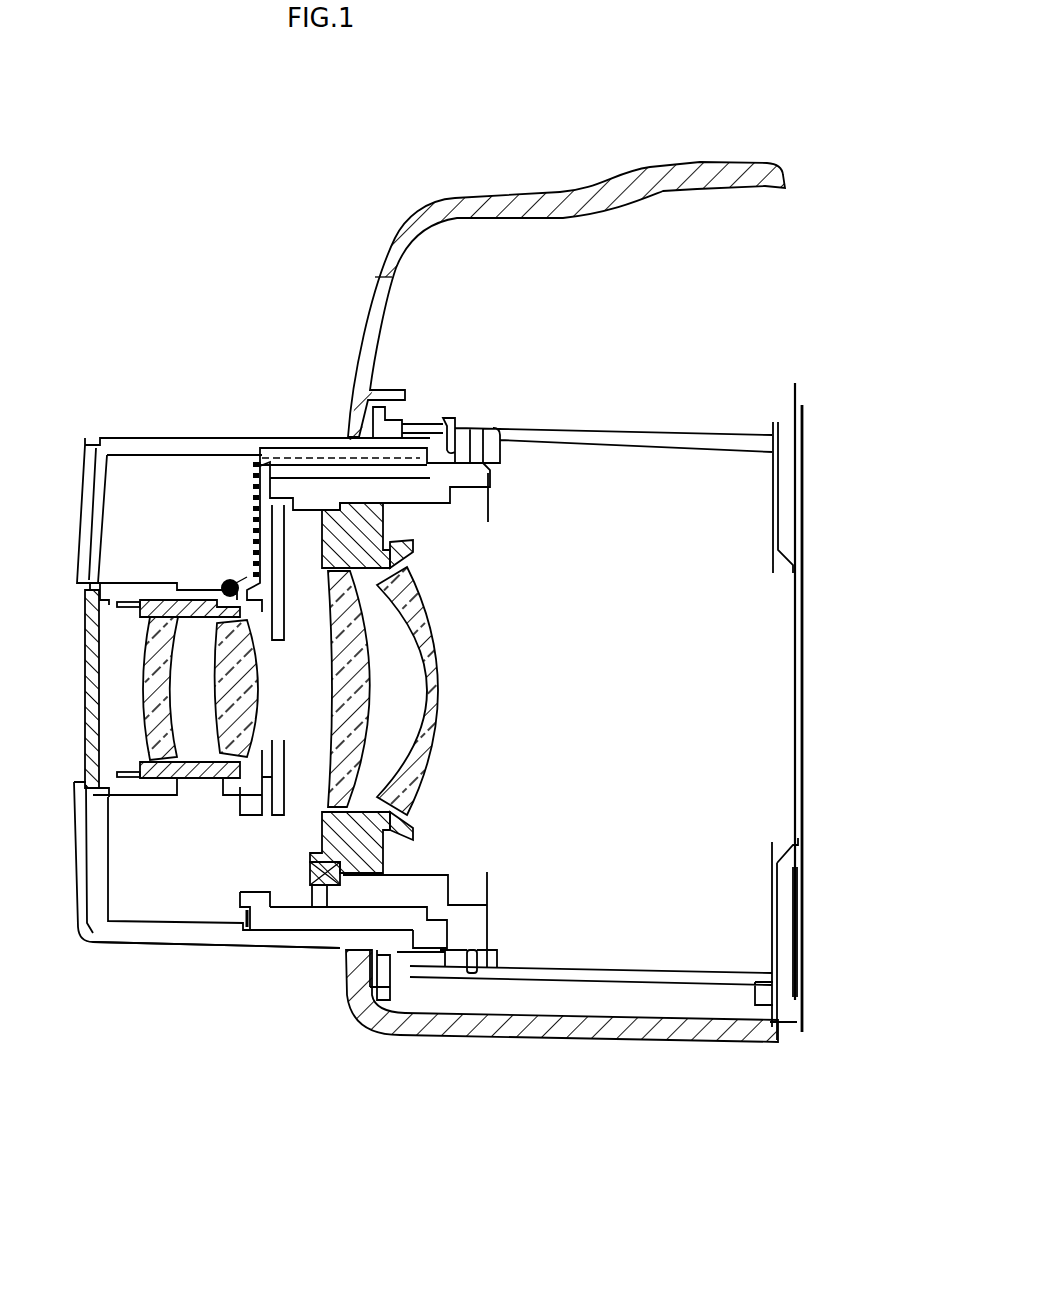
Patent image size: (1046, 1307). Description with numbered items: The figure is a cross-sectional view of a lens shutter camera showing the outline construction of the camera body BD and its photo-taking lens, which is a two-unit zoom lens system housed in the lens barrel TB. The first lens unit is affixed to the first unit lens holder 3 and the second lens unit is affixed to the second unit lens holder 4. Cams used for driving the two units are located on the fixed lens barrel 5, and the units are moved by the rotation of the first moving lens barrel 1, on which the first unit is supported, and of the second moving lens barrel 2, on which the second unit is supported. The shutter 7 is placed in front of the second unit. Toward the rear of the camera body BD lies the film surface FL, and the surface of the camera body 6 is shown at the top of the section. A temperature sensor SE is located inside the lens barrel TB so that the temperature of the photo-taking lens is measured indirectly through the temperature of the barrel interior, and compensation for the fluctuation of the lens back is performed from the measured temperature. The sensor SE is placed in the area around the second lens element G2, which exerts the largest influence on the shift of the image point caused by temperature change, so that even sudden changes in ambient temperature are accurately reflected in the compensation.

The first moving lens barrel 1 is at (157, 438).
The second moving lens barrel 2 is at (282, 485).
The first unit lens holder 3 is at (145, 768).
The second unit lens holder 4 is at (338, 506).
The fixed lens barrel 5 is at (642, 434).
The surface of the camera body 6 is at (642, 172).
The shutter 7 is at (283, 817).
The temperature sensor SE is at (222, 583).
The second lens element G2 is at (223, 757).
The lens barrel TB is at (141, 961).
The camera body BD is at (563, 1043).
The film surface FL is at (799, 823).